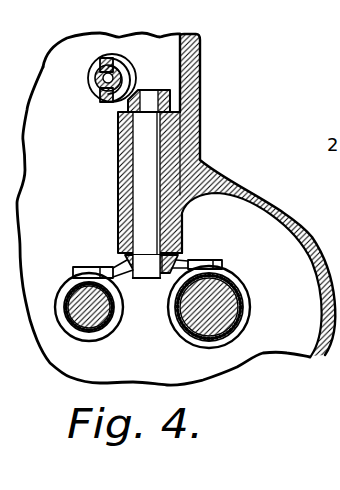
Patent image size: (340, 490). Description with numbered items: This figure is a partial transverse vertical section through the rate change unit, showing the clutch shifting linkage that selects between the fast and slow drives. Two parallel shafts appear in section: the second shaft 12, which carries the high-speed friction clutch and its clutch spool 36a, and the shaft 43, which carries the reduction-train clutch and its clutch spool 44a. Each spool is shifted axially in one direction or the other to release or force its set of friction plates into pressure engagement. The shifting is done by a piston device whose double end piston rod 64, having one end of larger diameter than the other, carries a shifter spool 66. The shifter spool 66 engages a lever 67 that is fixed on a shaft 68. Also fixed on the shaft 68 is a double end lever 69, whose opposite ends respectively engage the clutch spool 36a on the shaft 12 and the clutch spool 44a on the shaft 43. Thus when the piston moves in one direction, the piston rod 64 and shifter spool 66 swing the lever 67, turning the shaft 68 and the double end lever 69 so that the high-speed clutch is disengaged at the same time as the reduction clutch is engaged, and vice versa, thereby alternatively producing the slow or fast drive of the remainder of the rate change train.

The second shaft 12 is at (84, 302).
The clutch spool 36a is at (115, 332).
The shaft 43 is at (225, 313).
The clutch spool 44a is at (198, 347).
The double end piston rod 64 is at (96, 78).
The shifter spool 66 is at (93, 90).
The lever 67 is at (128, 101).
The shaft 68 is at (145, 141).
The double end lever 69 is at (125, 262).